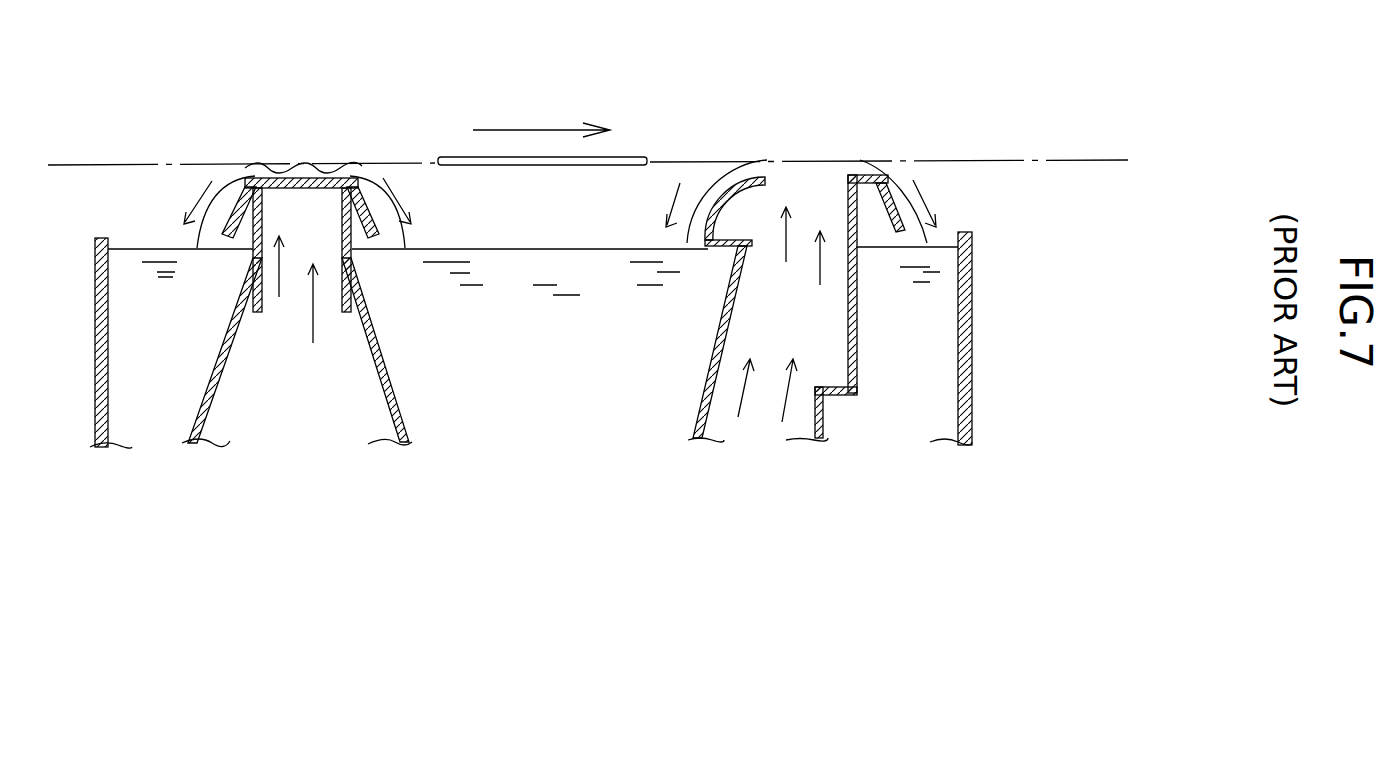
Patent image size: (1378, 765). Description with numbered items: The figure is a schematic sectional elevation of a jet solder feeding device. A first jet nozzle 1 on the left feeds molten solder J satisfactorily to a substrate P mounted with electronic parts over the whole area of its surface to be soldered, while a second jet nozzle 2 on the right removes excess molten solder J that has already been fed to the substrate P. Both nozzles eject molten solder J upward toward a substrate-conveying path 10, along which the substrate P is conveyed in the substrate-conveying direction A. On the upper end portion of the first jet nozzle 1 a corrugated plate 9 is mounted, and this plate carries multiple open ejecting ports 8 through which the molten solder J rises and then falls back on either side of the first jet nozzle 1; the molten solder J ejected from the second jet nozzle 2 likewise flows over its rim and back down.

The first jet nozzle 1 is at (396, 346).
The second jet nozzle 2 is at (878, 342).
The ejecting ports 8 is at (302, 178).
The corrugated plate 9 is at (240, 224).
The substrate-conveying path 10 is at (100, 163).
The molten solder J is at (270, 165).
The substrate P is at (447, 157).
The substrate-conveying direction A is at (541, 113).